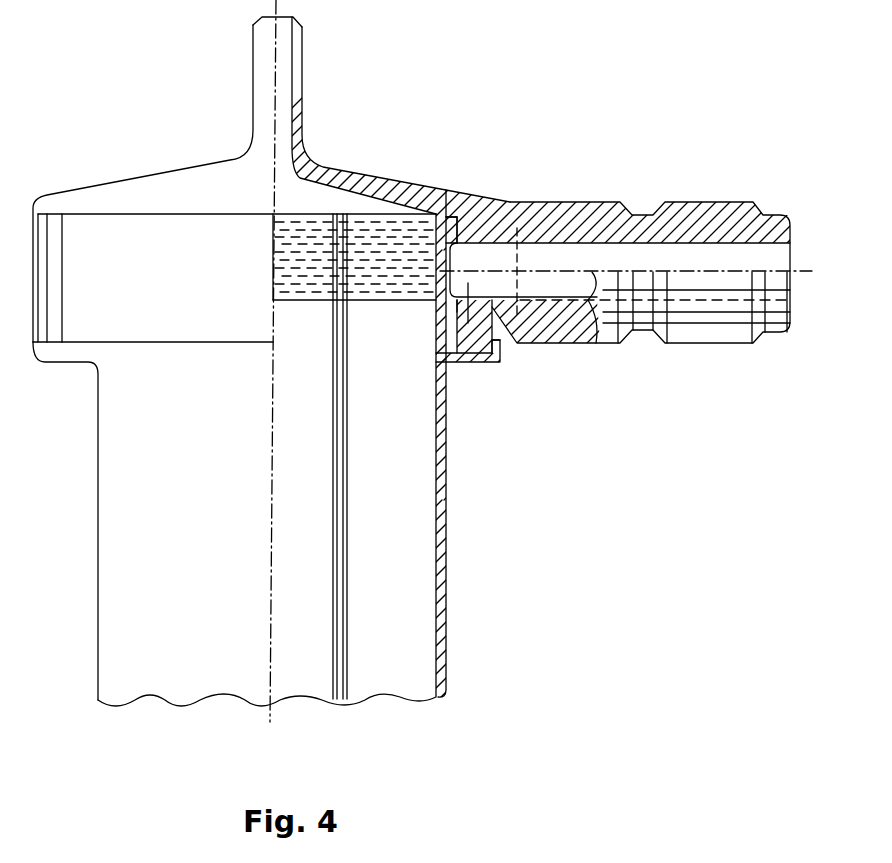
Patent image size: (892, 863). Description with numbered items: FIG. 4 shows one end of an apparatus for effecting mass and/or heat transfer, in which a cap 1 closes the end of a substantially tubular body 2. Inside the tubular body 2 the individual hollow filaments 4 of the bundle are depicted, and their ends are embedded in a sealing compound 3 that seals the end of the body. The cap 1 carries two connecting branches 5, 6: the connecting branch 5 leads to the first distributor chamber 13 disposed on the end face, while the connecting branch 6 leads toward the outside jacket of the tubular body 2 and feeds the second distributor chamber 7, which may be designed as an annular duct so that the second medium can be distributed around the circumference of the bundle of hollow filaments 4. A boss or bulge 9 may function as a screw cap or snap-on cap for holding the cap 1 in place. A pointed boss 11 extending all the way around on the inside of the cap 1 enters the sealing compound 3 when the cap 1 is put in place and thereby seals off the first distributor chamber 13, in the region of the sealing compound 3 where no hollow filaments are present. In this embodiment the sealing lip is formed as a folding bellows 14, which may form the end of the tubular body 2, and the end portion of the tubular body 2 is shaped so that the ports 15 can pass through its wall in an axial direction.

The cap 1 is at (380, 180).
The substantially tubular body 2 is at (443, 422).
The sealing compound 3 is at (300, 247).
The hollow filaments 4 is at (347, 487).
The connecting branch 5 is at (302, 75).
The connecting branch 6 is at (582, 217).
The second distributor chamber 7 is at (517, 232).
The boss or bulge 9 is at (515, 344).
The pointed boss 11 is at (440, 213).
The first distributor chamber 13 is at (323, 200).
The folding bellows 14 is at (478, 257).
The ports 15 is at (460, 312).